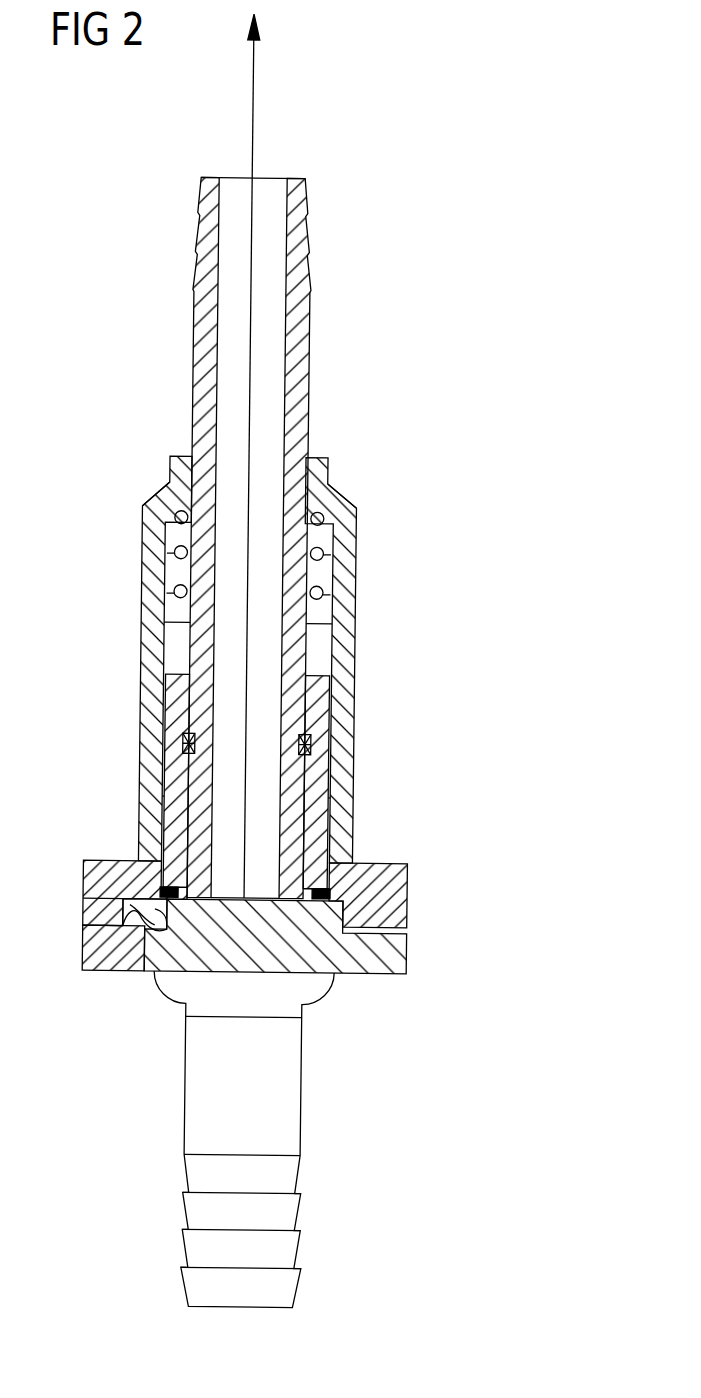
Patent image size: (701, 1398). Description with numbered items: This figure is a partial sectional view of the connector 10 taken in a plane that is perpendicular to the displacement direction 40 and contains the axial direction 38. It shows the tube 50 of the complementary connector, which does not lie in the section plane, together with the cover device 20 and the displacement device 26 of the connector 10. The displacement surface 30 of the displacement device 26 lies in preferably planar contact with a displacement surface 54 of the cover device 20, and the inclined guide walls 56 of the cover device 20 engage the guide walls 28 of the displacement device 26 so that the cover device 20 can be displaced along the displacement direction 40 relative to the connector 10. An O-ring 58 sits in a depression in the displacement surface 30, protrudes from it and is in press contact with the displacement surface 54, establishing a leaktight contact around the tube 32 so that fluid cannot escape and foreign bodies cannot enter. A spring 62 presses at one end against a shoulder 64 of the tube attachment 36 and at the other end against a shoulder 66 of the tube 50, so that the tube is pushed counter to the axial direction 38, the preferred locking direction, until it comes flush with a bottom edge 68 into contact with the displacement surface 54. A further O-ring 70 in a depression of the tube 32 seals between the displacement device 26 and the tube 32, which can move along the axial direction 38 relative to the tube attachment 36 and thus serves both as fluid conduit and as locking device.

The connector 10 is at (382, 498).
The cover device 20 is at (398, 958).
The displacement device 26 is at (402, 887).
The guide walls 28 is at (133, 912).
The displacement surface 30 is at (176, 918).
The tube 32 is at (302, 326).
The tube attachment 36 is at (345, 651).
The axial direction 38 is at (249, 90).
The displacement direction 40 is at (239, 943).
The tube 50 is at (282, 1105).
The displacement surface 54 is at (362, 888).
The guide walls 56 is at (160, 920).
The O-ring 58 is at (163, 890).
The spring 62 is at (143, 546).
The shoulder 64 is at (158, 493).
The shoulder 66 is at (166, 621).
The bottom edge 68 is at (318, 905).
The O-ring 70 is at (186, 745).